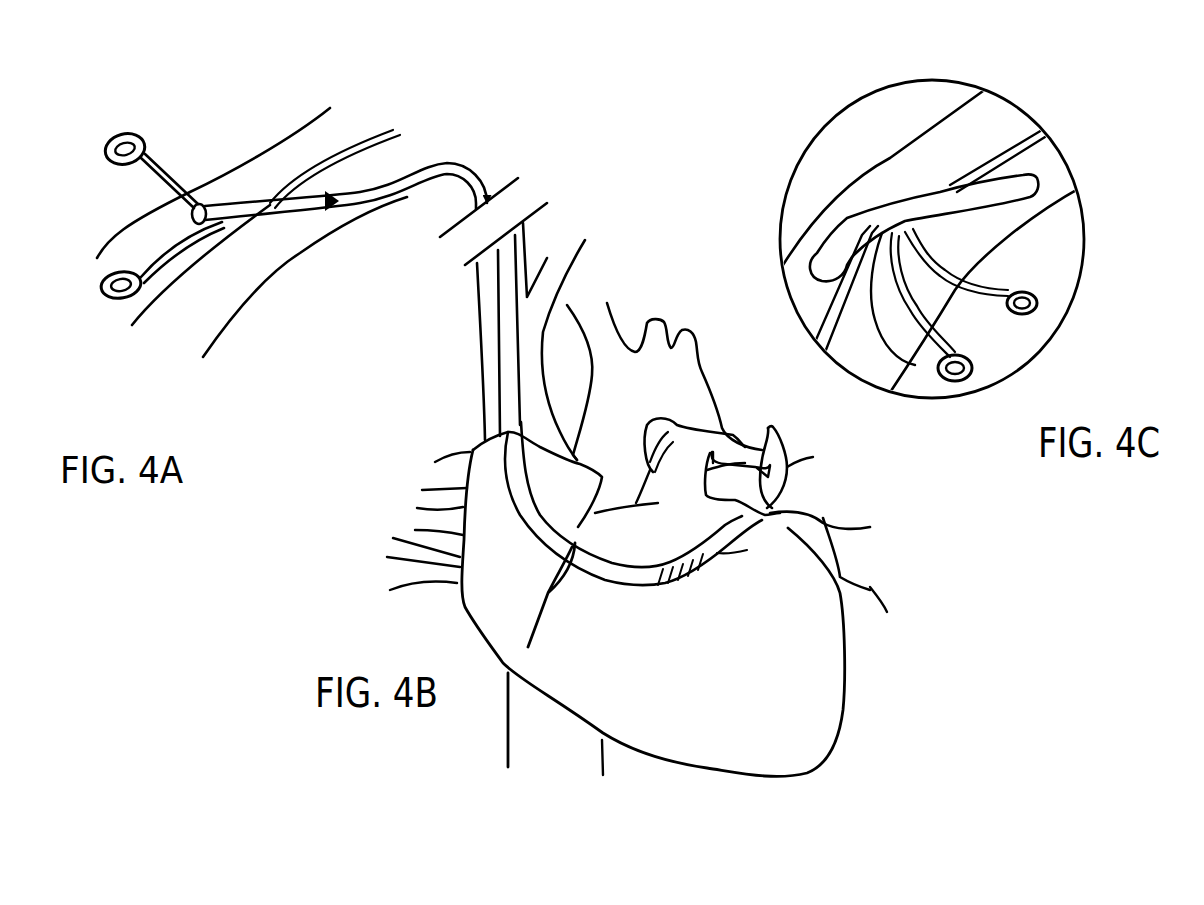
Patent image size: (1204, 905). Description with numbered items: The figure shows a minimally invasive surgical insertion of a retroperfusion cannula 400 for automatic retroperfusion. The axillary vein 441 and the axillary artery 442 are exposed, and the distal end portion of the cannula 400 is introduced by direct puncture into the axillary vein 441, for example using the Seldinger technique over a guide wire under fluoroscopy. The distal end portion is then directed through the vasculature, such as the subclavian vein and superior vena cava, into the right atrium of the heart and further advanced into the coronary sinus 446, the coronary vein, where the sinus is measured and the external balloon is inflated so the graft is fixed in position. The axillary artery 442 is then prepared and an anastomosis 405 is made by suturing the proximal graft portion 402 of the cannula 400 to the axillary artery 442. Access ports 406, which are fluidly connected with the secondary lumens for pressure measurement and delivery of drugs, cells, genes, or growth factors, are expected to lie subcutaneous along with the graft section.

In FIG. 4B, the cannula 400 is at (657, 587).
In FIG. 4A, the proximal graft portion 402 is at (220, 216).
In FIG. 4C, the anastomosis 405 is at (870, 226).
In FIG. 4A, the access ports 406 is at (121, 158).
In FIG. 4C, the access ports 406 is at (1027, 318).
In FIG. 4A, the axillary vein 441 is at (240, 267).
In FIG. 4A, the axillary artery 442 is at (317, 143).
In FIG. 4B, the coronary sinus 446 is at (503, 667).